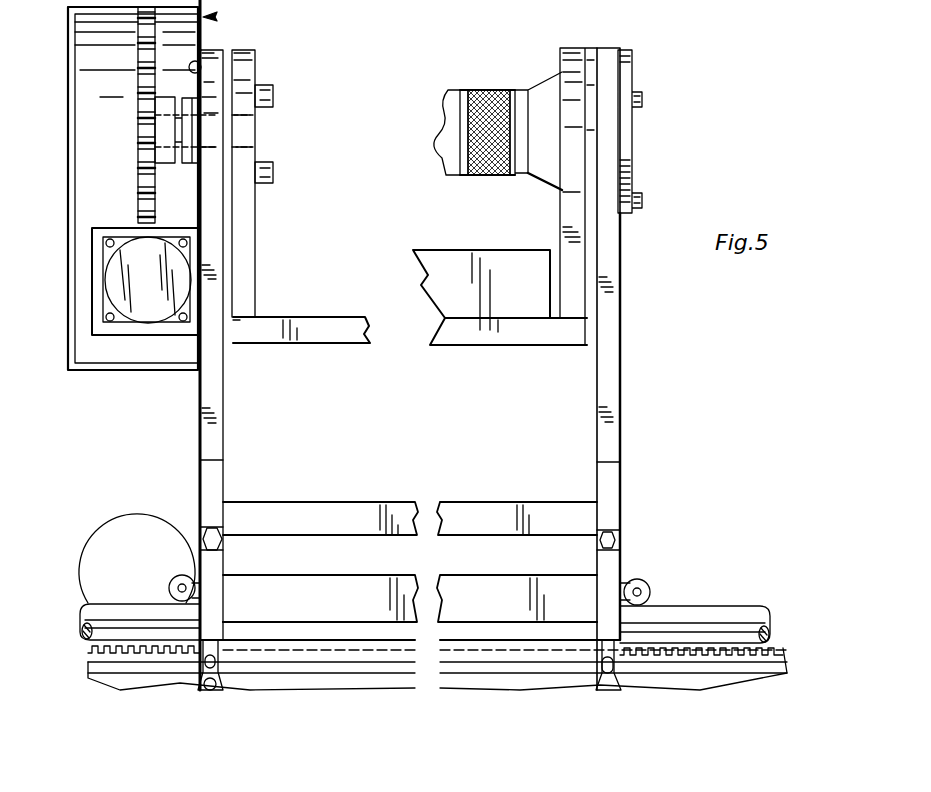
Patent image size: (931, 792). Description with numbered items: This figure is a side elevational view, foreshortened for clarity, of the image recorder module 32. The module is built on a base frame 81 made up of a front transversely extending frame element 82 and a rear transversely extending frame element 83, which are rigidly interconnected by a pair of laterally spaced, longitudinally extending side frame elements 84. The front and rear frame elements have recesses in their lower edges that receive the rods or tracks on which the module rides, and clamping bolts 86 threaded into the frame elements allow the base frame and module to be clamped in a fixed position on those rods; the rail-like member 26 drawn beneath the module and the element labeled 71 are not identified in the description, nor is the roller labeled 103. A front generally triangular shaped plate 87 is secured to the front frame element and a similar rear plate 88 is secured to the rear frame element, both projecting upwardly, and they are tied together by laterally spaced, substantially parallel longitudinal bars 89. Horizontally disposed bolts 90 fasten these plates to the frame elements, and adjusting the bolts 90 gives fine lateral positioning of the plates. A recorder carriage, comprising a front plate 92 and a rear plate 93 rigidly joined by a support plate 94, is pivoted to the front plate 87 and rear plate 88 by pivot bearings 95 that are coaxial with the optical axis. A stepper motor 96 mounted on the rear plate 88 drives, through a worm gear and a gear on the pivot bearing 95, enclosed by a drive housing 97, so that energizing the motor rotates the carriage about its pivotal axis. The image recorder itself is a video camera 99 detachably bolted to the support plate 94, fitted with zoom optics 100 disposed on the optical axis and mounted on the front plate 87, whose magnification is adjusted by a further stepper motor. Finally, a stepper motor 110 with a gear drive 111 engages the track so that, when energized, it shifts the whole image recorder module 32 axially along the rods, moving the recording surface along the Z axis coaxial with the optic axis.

The rail 26 is at (732, 612).
The image recorder module 32 is at (421, 62).
The drive chain indicator 71 is at (219, 19).
The base frame 81 is at (590, 588).
The front transversely extending frame element 82 is at (607, 567).
The rear transversely extending frame element 83 is at (207, 557).
The longitudinally extending side frame elements 84 is at (330, 590).
The clamping bolts 86 is at (220, 680).
The front generally triangular shaped plate 87 is at (605, 250).
The rear plate 88 is at (210, 233).
The longitudinally extending bars 89 is at (343, 513).
The bolts 90 is at (200, 535).
The front plate 92 is at (565, 215).
The rear plate 93 is at (240, 205).
The support plate 94 is at (447, 327).
The pivot bearings 95 is at (225, 125).
The stepper motor 96 is at (155, 318).
The drive housing 97 is at (78, 372).
The video camera 99 is at (458, 184).
The zoom optics 100 is at (485, 95).
The roller 103 is at (170, 586).
The stepper motor 110 is at (107, 530).
The gear drive 111 is at (138, 647).